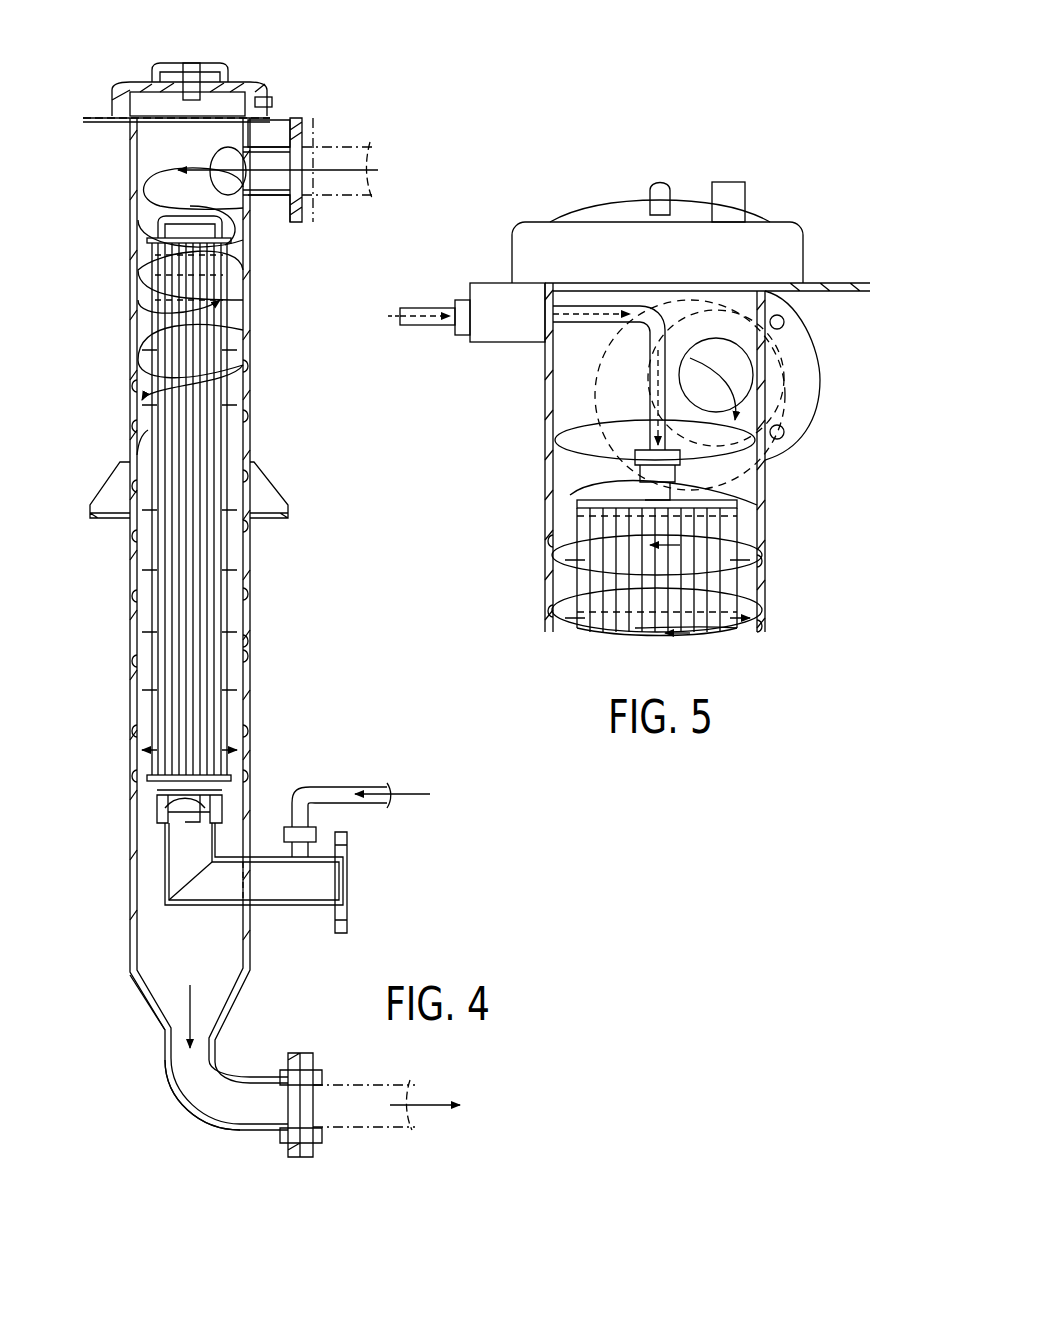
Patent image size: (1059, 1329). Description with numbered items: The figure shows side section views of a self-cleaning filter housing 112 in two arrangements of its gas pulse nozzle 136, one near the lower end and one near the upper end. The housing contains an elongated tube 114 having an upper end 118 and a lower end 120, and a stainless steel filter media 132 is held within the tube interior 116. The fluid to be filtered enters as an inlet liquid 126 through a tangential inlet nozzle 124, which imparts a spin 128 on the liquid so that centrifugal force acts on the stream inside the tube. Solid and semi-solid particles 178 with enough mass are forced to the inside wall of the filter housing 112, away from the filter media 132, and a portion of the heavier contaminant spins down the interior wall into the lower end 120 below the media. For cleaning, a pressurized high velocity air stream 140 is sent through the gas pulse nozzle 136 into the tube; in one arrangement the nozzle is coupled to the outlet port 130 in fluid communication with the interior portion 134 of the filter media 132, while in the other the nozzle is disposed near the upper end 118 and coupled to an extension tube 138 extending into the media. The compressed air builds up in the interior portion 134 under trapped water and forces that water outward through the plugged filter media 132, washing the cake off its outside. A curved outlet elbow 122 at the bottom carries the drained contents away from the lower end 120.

In FIG. 4, the filter housing 112 is at (128, 300).
In FIG. 5, the filter housing 112 is at (775, 496).
In FIG. 4, the elongated tube 114 is at (128, 232).
In FIG. 5, the elongated tube 114 is at (767, 532).
In FIG. 4, the tube interior 116 is at (240, 405).
In FIG. 5, the tube interior 116 is at (590, 390).
In FIG. 4, the upper end 118 is at (118, 135).
In FIG. 5, the upper end 118 is at (836, 378).
In FIG. 4, the lower end 120 is at (122, 963).
In FIG. 4, the outlet elbow 122 is at (138, 1000).
In FIG. 4, the tangential inlet nozzle 124 is at (283, 168).
In FIG. 5, the tangential inlet nozzle 124 is at (808, 330).
In FIG. 4, the inlet liquid 126 is at (345, 168).
In FIG. 4, the spin 128 is at (196, 172).
In FIG. 4, the outlet port 130 is at (358, 898).
In FIG. 4, the filter media 132 is at (205, 465).
In FIG. 5, the filter media 132 is at (695, 585).
In FIG. 4, the interior portion 134 is at (185, 800).
In FIG. 5, the interior portion 134 is at (645, 630).
In FIG. 4, the gas pulse nozzle 136 is at (320, 828).
In FIG. 5, the gas pulse nozzle 136 is at (490, 282).
In FIG. 5, the extension tube 138 is at (648, 338).
In FIG. 4, the air stream 140 is at (462, 775).
In FIG. 4, the solid and semi-solid particles 178 is at (137, 658).
In FIG. 5, the solid and semi-solid particles 178 is at (553, 610).